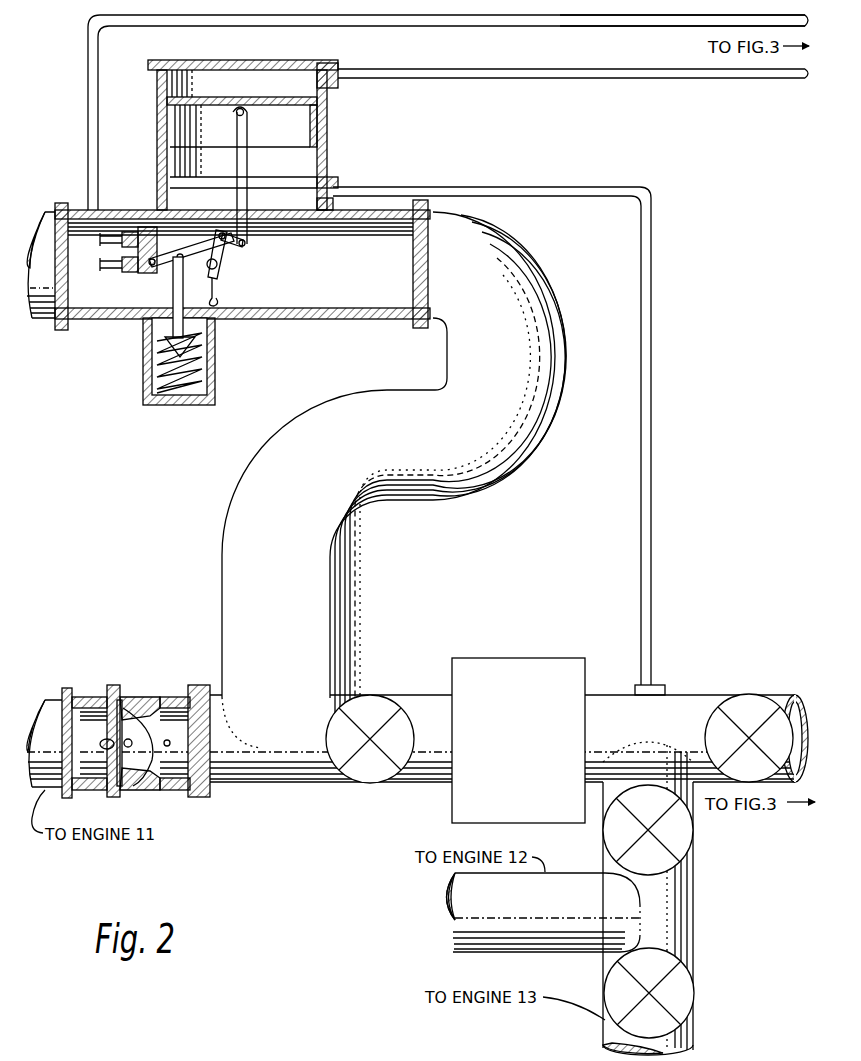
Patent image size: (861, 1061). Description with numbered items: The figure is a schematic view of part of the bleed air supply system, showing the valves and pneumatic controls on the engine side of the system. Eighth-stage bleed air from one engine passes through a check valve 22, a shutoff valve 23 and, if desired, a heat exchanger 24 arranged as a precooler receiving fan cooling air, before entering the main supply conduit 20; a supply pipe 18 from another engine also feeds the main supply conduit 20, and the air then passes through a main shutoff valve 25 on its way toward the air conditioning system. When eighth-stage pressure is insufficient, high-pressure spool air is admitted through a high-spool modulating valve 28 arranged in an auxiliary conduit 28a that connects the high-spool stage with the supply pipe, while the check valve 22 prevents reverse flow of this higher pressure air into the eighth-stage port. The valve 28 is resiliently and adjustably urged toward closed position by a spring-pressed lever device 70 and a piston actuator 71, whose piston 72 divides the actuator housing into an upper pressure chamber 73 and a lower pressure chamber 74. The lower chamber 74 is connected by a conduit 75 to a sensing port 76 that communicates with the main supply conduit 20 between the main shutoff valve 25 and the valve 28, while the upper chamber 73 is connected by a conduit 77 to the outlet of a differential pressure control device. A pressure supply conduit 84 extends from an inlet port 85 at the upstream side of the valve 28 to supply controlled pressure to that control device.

The supply pipe 18 is at (680, 978).
The main supply conduit 20 is at (705, 694).
The check valve 22 is at (130, 708).
The shutoff valve 23 is at (364, 697).
The heat exchanger 24 is at (575, 675).
The main shutoff valve 25 is at (750, 700).
The high-spool modulating valve 28 is at (213, 292).
The auxiliary conduit 28a is at (228, 521).
The spring-pressed lever device 70 is at (172, 283).
The piston actuator 71 is at (237, 122).
The piston 72 is at (295, 125).
The upper pressure chamber 73 is at (295, 77).
The lower pressure chamber 74 is at (303, 160).
The conduit 75 is at (655, 416).
The sensing port 76 is at (660, 684).
The conduit 77 is at (433, 67).
The pressure supply conduit 84 is at (572, 27).
The inlet port 85 is at (96, 212).